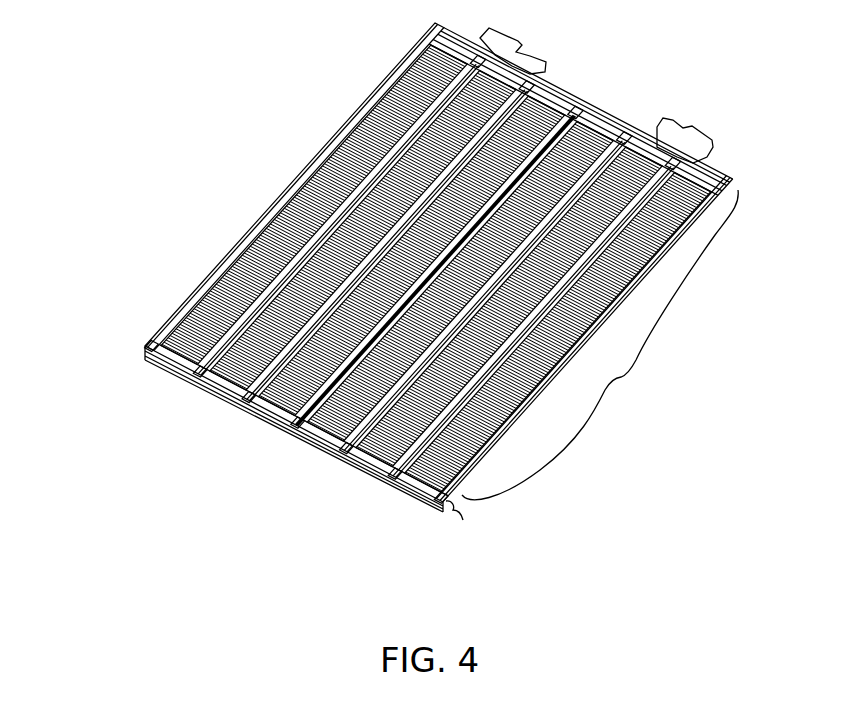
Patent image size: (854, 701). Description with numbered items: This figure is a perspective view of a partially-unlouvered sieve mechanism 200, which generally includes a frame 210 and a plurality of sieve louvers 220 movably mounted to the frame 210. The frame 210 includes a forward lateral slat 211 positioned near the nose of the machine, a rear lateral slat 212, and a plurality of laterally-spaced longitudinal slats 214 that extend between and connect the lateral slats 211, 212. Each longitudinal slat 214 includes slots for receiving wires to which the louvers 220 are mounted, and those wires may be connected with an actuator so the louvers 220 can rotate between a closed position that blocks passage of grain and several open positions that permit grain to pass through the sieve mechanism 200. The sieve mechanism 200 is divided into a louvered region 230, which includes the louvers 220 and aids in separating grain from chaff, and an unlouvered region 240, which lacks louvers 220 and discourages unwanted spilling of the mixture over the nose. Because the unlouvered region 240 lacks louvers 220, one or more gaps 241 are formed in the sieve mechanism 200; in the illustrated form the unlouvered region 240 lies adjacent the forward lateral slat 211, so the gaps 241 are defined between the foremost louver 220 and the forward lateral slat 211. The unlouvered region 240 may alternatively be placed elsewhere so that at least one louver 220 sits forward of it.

The partially-unlouvered sieve mechanism 200 is at (167, 48).
The frame 210 is at (153, 338).
The forward lateral slat 211 is at (205, 393).
The rear lateral slat 212 is at (558, 102).
The longitudinal slats 214 is at (399, 60).
The sieve louvers 220 is at (357, 147).
The louvered region 230 is at (600, 345).
The unlouvered region 240 is at (475, 516).
The gaps 241 is at (377, 453).